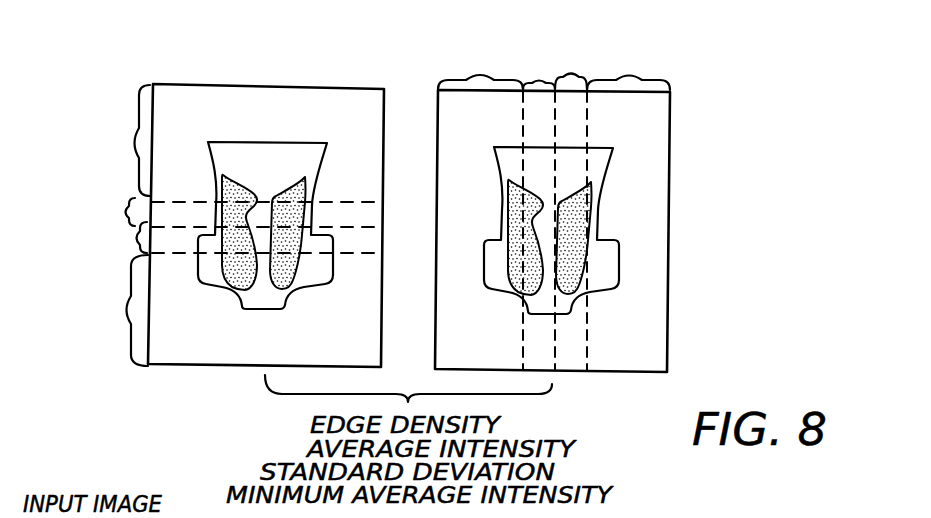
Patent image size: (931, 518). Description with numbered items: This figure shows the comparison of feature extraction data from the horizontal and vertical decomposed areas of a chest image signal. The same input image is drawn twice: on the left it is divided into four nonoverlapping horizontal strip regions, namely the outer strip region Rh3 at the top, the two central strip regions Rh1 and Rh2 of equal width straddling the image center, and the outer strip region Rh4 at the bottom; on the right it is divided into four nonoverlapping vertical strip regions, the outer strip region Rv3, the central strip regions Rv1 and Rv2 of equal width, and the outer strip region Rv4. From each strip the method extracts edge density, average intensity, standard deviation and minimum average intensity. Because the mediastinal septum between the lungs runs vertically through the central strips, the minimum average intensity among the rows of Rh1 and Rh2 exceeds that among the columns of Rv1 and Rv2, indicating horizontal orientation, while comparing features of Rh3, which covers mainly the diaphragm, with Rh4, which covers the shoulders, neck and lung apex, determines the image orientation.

The horizontal strip region Rh1 is at (100, 211).
The horizontal strip region Rh2 is at (106, 237).
The horizontal strip region Rh3 is at (107, 140).
The horizontal strip region Rh4 is at (106, 310).
The vertical strip region Rv1 is at (534, 63).
The vertical strip region Rv2 is at (581, 50).
The vertical strip region Rv3 is at (480, 63).
The vertical strip region Rv4 is at (628, 63).